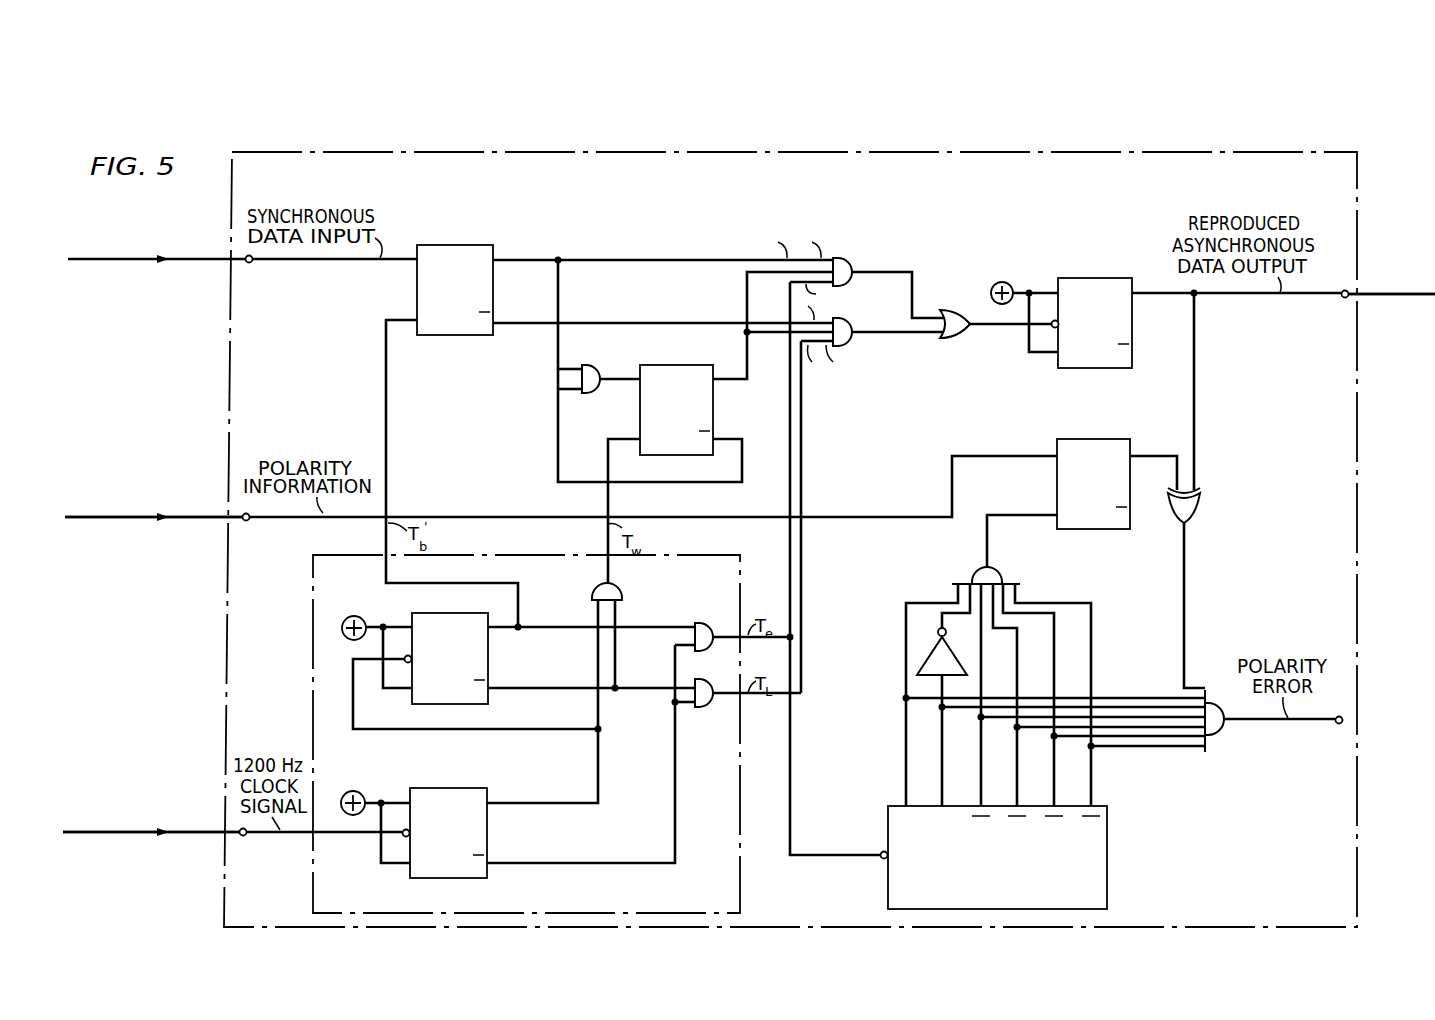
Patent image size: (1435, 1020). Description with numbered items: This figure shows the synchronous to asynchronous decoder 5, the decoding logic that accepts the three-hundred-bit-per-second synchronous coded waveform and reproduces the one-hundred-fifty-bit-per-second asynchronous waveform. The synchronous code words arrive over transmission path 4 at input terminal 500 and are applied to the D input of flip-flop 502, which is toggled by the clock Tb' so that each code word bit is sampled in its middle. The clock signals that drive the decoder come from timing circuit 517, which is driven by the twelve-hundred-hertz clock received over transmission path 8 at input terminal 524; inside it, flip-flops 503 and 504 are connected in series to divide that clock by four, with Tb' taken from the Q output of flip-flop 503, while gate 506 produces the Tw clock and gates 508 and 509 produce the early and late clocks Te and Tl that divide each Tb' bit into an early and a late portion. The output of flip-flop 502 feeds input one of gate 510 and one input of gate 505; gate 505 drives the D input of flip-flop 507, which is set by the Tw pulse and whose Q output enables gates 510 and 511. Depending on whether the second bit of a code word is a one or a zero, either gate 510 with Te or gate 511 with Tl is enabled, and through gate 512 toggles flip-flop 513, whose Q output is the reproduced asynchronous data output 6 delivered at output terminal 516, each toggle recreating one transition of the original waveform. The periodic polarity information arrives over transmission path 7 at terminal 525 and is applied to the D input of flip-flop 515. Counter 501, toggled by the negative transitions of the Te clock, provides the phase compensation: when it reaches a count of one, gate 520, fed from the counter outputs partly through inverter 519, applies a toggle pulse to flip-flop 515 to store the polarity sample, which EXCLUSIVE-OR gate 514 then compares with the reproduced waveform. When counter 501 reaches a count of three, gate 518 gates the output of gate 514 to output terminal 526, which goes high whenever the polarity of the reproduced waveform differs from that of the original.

The transmission path 4 is at (143, 258).
The synchronous to asynchronous decoder 5 is at (1358, 186).
The reproduced asynchronous data output path 6 is at (1408, 293).
The transmission path 7 is at (143, 514).
The transmission path 8 is at (176, 830).
The synchronous data input terminal 500 is at (250, 263).
The counter 501 is at (1107, 876).
The flip-flop 502 is at (462, 336).
The flip-flop 503 is at (457, 597).
The flip-flop 504 is at (450, 788).
The gate 505 is at (590, 366).
The AND gate 506 is at (620, 587).
The flip-flop 507 is at (670, 366).
The AND gate 508 is at (709, 622).
The AND gate 509 is at (702, 708).
The gate 510 is at (848, 243).
The gate 511 is at (848, 304).
The gate 512 is at (958, 337).
The flip-flop 513 is at (1103, 369).
The EXCLUSIVE-OR gate 514 is at (1200, 507).
The flip-flop 515 is at (1117, 529).
The output terminal 516 is at (1341, 298).
The timing circuit 517 is at (740, 881).
The gate 518 is at (1213, 737).
The inverter 519 is at (918, 663).
The AND gate 520 is at (998, 568).
The input terminal 524 is at (246, 836).
The input terminal 525 is at (248, 521).
The output terminal 526 is at (1337, 724).